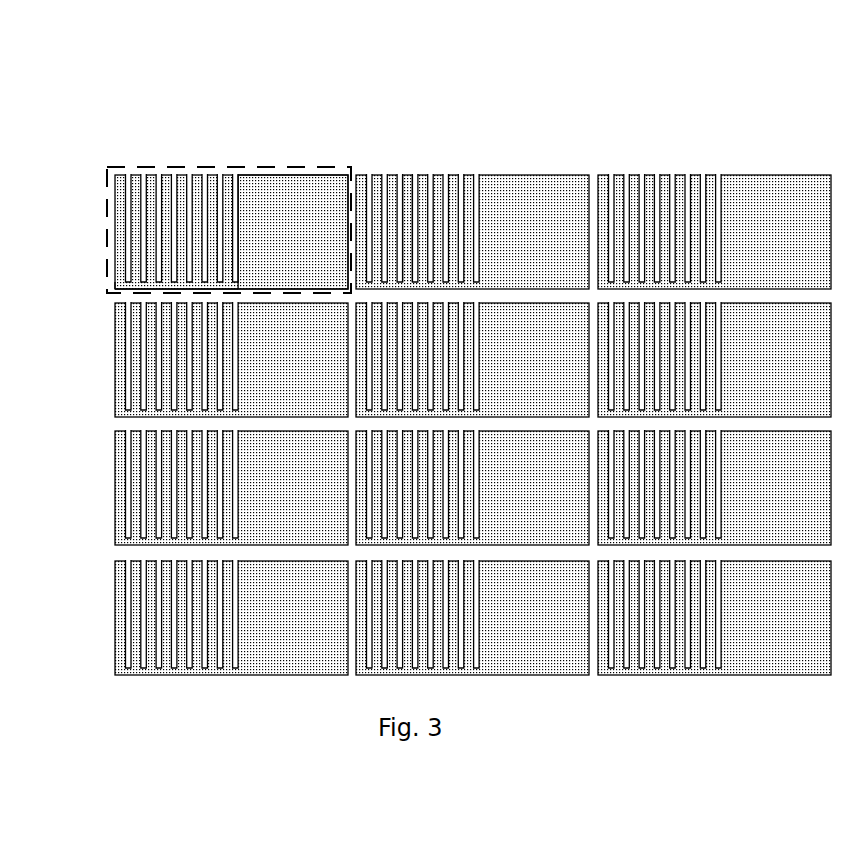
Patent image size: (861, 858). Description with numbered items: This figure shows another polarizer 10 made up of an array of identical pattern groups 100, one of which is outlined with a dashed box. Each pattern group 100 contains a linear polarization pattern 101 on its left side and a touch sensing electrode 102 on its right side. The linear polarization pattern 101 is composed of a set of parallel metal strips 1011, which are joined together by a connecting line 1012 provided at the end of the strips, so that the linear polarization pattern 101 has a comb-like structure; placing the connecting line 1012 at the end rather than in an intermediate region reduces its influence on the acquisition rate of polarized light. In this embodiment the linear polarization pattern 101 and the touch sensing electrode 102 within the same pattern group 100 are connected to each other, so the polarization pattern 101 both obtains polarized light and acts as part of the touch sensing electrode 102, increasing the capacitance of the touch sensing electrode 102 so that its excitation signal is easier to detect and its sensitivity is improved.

The polarizer 10 is at (67, 55).
The pattern group 100 is at (352, 83).
The linear polarization pattern 101 is at (198, 177).
The touch sensing electrode 102 is at (293, 180).
The metal strip 1011 is at (405, 177).
The connecting line 1012 is at (122, 286).